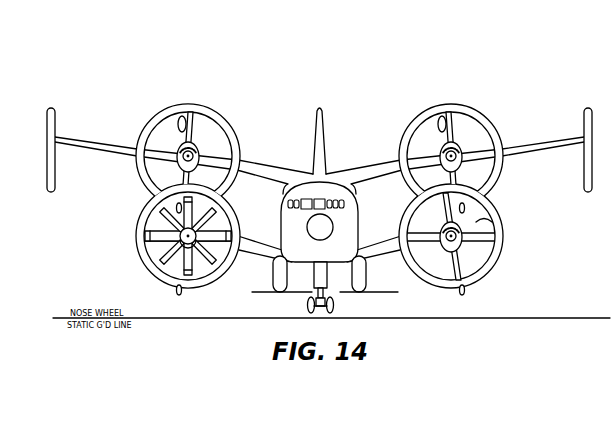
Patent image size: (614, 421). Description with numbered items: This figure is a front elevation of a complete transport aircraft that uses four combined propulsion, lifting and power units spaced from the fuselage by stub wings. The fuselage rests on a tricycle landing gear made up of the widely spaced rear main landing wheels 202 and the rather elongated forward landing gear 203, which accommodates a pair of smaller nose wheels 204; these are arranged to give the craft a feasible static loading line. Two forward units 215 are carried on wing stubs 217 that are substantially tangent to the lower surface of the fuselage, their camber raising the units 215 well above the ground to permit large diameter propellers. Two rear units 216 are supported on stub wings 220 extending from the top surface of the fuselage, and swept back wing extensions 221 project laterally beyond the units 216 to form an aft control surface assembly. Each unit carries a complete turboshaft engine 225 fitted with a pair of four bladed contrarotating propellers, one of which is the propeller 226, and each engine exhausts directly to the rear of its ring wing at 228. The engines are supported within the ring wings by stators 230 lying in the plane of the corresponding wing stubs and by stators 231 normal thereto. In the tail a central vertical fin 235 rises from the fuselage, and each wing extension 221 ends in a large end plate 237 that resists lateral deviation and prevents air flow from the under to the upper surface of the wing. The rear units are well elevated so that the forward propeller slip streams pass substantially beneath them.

The main landing wheels 202 is at (273, 280).
The forward landing gear 203 is at (328, 274).
The nose wheels 204 is at (308, 306).
The forward combined propulsion, lifting and power units 215 is at (142, 265).
The rear combined propulsion, lifting and power units 216 is at (147, 124).
The wing stubs 217 is at (260, 248).
The stub wings 220 is at (268, 172).
The swept back wing extensions 221 is at (103, 147).
The turboshaft engine 225 is at (463, 243).
The four bladed propeller 226 is at (168, 215).
The engine exhaust 228 is at (152, 249).
The stators 230 is at (483, 222).
The stators 231 is at (190, 113).
The central vertical fin 235 is at (320, 106).
The end plate 237 is at (55, 172).